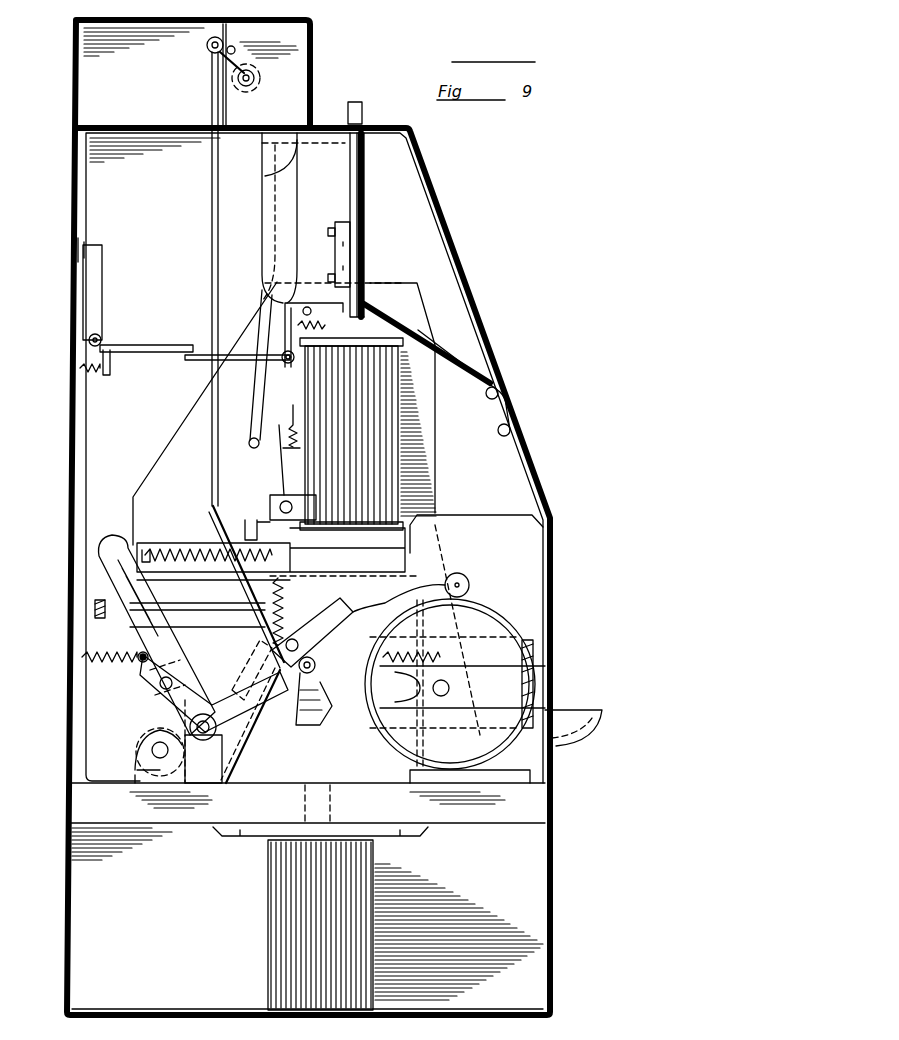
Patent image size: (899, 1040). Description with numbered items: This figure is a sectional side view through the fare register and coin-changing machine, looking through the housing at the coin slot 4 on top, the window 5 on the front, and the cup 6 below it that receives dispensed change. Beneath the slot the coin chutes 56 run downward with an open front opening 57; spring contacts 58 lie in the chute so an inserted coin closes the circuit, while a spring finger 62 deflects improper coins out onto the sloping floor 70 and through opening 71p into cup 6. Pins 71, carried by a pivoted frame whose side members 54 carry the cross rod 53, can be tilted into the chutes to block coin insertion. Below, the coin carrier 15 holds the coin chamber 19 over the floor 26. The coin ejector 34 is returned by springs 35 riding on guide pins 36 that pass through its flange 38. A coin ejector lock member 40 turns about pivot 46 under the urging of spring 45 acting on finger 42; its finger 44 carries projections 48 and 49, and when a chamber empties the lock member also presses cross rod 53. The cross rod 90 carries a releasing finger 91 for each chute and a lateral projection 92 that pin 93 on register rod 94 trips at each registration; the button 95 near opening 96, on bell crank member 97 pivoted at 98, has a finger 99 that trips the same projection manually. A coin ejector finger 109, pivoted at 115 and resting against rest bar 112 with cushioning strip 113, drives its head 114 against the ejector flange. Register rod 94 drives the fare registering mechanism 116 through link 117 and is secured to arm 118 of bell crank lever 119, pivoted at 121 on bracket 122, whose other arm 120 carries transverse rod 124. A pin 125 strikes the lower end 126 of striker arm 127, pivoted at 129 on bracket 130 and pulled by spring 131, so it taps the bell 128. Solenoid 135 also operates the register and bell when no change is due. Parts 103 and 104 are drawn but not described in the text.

The coin slot 4 is at (358, 102).
The window 5 is at (470, 268).
The cup 6 is at (580, 718).
The coin carrier 15 is at (428, 384).
The coin chamber 19 is at (351, 434).
The floor 26 is at (524, 818).
The coin ejector 34 is at (154, 546).
The springs 35 is at (176, 551).
The guide pins 36 is at (200, 551).
The flange 38 is at (133, 540).
The coin ejector lock member 40 is at (282, 462).
The finger 42 is at (250, 432).
The finger 44 is at (250, 522).
The spring 45 is at (292, 425).
The pivot 46 is at (284, 505).
The projection 48 is at (246, 579).
The projection 49 is at (212, 506).
The cross rod 53 is at (248, 443).
The side members 54 is at (260, 380).
The coin chutes 56 is at (366, 194).
The opening 57 is at (366, 212).
The spring contacts 58 is at (352, 228).
The spring finger 62 is at (345, 180).
The floor 70 is at (412, 322).
The pins 71 is at (347, 136).
The opening 71p is at (450, 356).
The cross rod 90 is at (284, 376).
The releasing finger 91 is at (336, 336).
The lateral projection 92 is at (198, 362).
The pin 93 is at (213, 310).
The register rod 94 is at (208, 272).
The button 95 is at (76, 250).
The opening 96 is at (80, 260).
The bell crank member 97 is at (90, 300).
The pivot 98 is at (88, 340).
The finger 99 is at (145, 353).
The bracket 103 is at (216, 834).
The lower cylinder 104 is at (268, 830).
The coin ejector finger 109 is at (112, 580).
The rest bar 112 is at (95, 604).
The cushioning strip 113 is at (96, 618).
The head 114 is at (104, 548).
The pivot 115 is at (152, 748).
The arm 118 is at (252, 689).
The bell crank lever 119 is at (212, 694).
The arm 120 is at (152, 662).
The pivot 121 is at (190, 725).
The bracket 122 is at (220, 752).
The transverse rod 124 is at (160, 685).
The pin 125 is at (292, 650).
The lower end 126 is at (304, 726).
The striker arm 127 is at (386, 606).
The bell 128 is at (494, 618).
The pivot 129 is at (324, 656).
The bracket 130 is at (540, 690).
The spring 131 is at (446, 660).
The solenoid 135 is at (524, 640).
The fare registering mechanism 116 is at (298, 66).
The link 117 is at (232, 66).